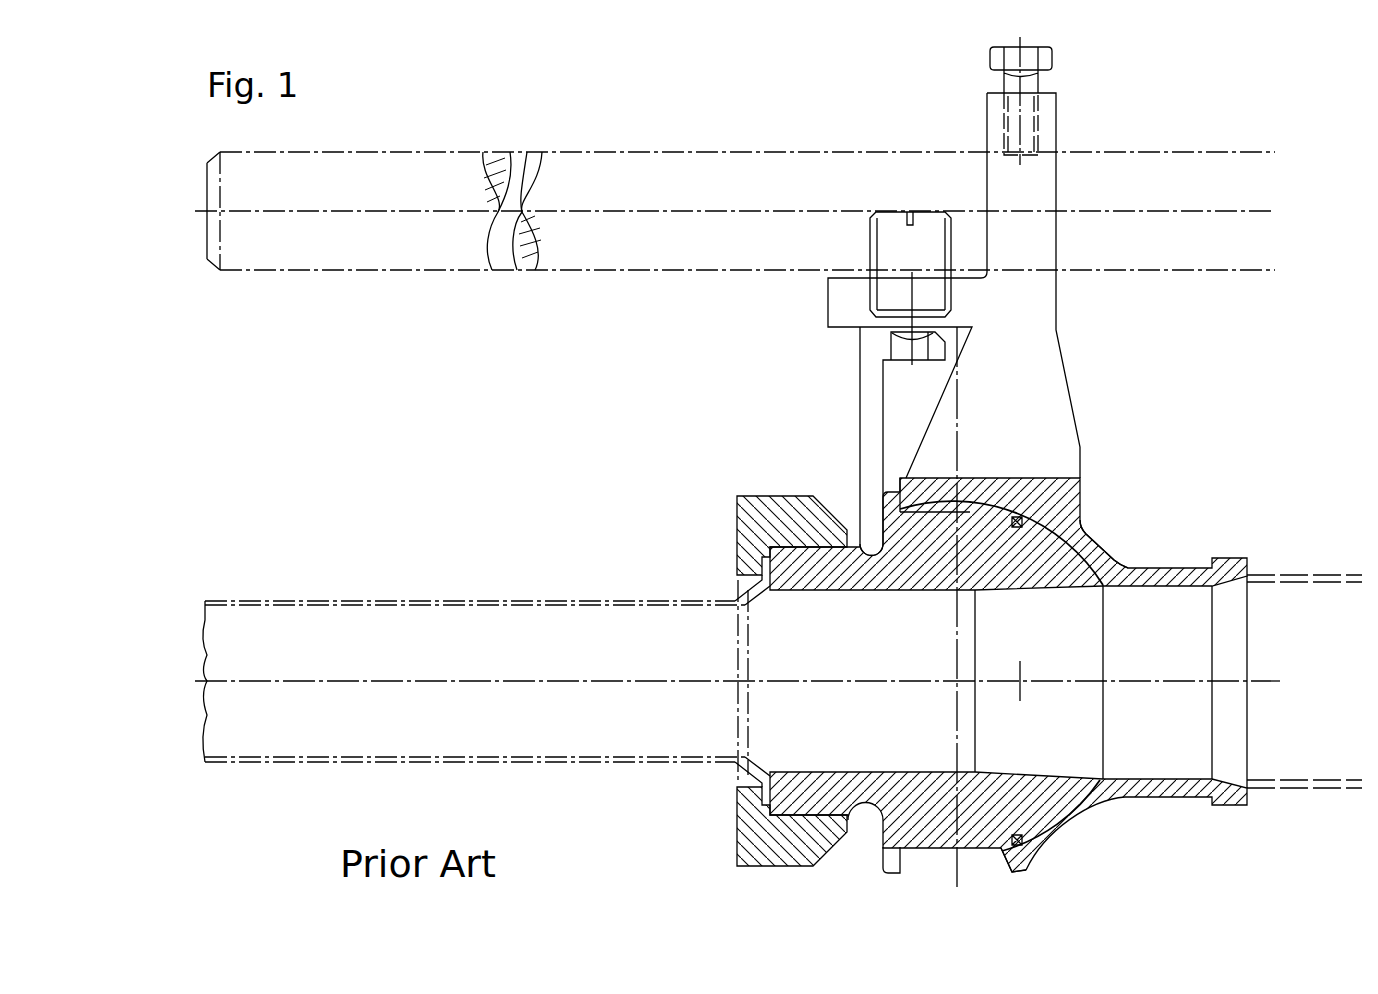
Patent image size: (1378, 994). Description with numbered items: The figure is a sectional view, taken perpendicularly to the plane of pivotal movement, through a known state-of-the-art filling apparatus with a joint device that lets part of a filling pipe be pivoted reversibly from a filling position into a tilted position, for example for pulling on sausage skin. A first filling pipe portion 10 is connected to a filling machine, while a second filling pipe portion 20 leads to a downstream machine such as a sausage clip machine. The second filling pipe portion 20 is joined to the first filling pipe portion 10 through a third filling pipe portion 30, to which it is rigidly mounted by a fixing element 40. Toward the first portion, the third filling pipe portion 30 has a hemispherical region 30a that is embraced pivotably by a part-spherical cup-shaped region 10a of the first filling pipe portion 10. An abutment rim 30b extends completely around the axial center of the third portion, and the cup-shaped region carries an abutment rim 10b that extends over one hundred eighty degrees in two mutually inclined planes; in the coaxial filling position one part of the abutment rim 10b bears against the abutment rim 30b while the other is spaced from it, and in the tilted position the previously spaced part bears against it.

The first filling pipe portion 10 is at (1293, 575).
The part-spherical cup-shaped region 10a is at (1114, 555).
The abutment rim 10b is at (925, 487).
The second filling pipe portion 20 is at (706, 599).
The third filling pipe portion 30 is at (897, 560).
The hemispherical region 30a is at (1082, 805).
The abutment rim 30b is at (893, 856).
The fixing element 40 is at (768, 525).